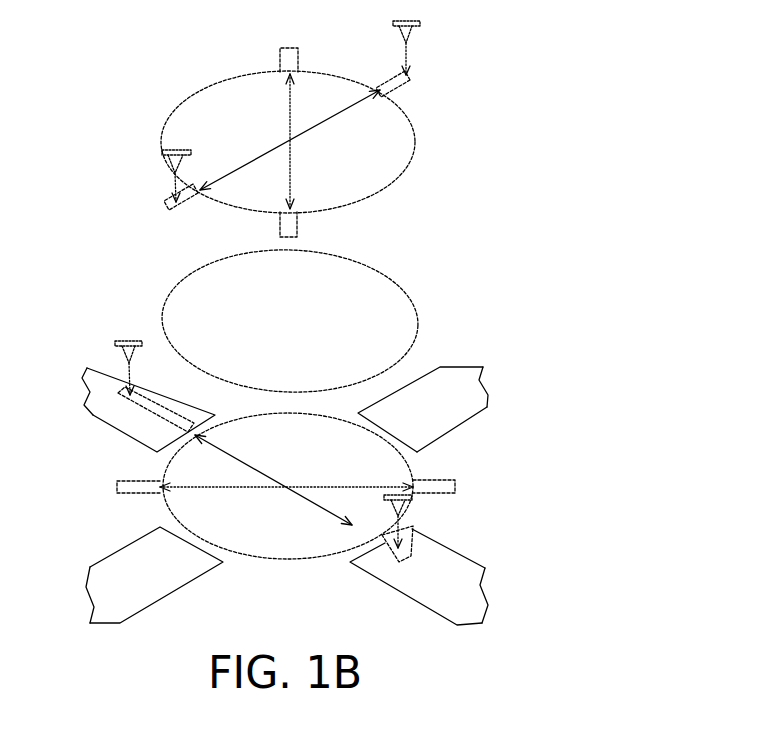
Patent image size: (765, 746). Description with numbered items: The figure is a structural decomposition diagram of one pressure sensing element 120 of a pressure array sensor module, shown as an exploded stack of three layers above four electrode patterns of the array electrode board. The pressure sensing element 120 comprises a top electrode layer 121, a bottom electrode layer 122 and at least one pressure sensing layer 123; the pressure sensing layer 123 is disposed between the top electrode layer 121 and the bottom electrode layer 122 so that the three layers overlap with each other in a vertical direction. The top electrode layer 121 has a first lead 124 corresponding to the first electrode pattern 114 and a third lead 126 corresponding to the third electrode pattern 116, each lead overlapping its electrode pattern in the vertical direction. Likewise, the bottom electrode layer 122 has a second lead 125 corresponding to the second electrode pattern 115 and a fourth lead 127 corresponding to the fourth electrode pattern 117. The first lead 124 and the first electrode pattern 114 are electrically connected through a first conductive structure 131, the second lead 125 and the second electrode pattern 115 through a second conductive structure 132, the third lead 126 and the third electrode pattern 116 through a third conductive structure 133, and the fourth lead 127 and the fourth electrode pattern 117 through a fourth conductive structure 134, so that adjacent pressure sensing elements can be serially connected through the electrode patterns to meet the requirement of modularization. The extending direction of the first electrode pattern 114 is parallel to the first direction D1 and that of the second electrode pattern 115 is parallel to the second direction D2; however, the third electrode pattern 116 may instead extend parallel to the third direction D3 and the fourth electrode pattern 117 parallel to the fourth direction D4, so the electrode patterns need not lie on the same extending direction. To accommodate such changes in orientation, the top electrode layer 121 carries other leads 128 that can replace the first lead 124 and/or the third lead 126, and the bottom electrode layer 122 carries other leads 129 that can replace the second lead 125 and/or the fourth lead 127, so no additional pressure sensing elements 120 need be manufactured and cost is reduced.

The pressure sensing element 120 is at (180, 72).
The top electrode layer 121 is at (400, 135).
The bottom electrode layer 122 is at (307, 550).
The pressure sensing layer 123 is at (395, 310).
The first lead 124 is at (170, 203).
The second lead 125 is at (415, 530).
The third lead 126 is at (414, 84).
The fourth lead 127 is at (101, 405).
The other leads 128 is at (289, 48).
The other leads 129 is at (117, 487).
The first conductive structure 131 is at (170, 151).
The second conductive structure 132 is at (410, 505).
The third conductive structure 133 is at (420, 23).
The fourth conductive structure 134 is at (130, 342).
The first electrode pattern 114 is at (160, 557).
The second electrode pattern 115 is at (397, 577).
The third electrode pattern 116 is at (457, 403).
The fourth electrode pattern 117 is at (102, 413).
The first direction D1 is at (343, 100).
The second direction D2 is at (283, 492).
The third direction D3 is at (287, 100).
The fourth direction D4 is at (213, 468).